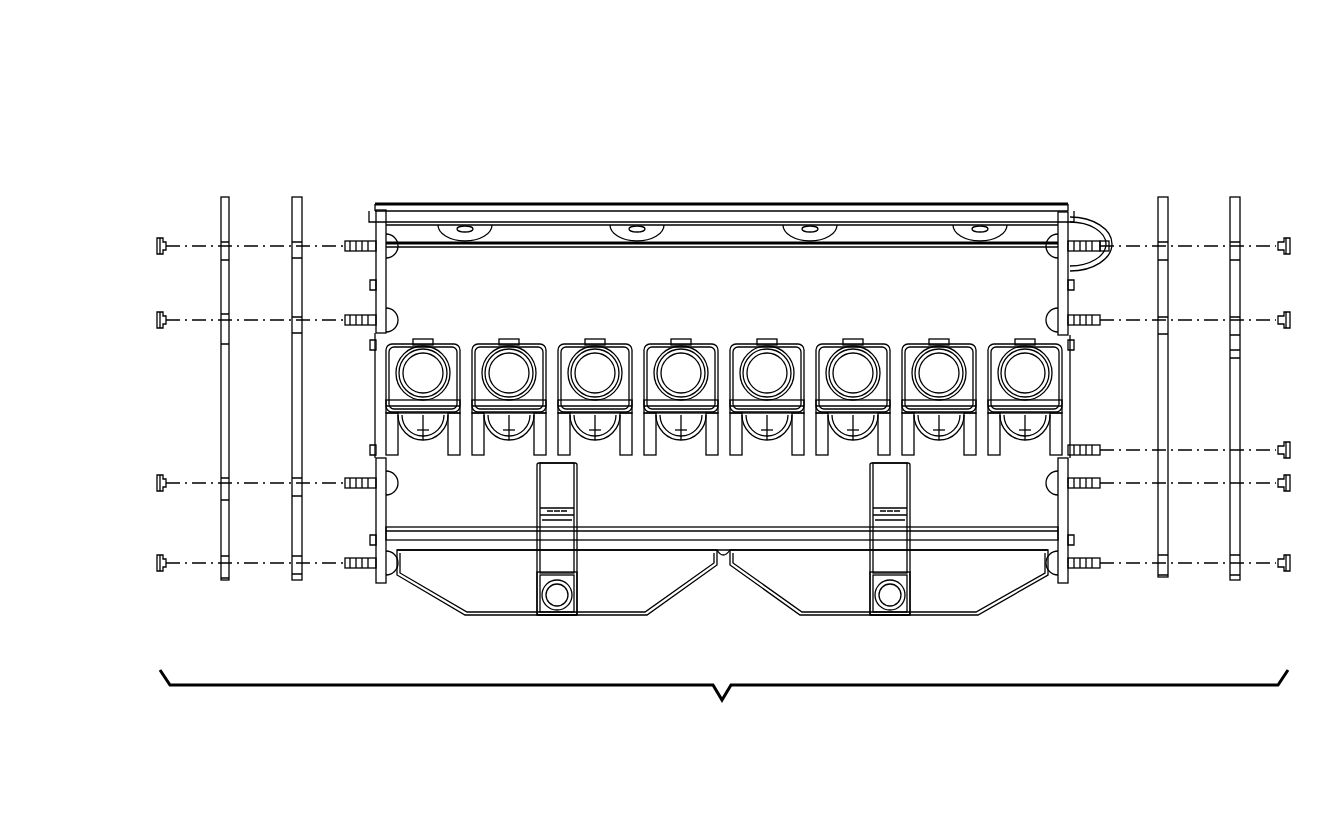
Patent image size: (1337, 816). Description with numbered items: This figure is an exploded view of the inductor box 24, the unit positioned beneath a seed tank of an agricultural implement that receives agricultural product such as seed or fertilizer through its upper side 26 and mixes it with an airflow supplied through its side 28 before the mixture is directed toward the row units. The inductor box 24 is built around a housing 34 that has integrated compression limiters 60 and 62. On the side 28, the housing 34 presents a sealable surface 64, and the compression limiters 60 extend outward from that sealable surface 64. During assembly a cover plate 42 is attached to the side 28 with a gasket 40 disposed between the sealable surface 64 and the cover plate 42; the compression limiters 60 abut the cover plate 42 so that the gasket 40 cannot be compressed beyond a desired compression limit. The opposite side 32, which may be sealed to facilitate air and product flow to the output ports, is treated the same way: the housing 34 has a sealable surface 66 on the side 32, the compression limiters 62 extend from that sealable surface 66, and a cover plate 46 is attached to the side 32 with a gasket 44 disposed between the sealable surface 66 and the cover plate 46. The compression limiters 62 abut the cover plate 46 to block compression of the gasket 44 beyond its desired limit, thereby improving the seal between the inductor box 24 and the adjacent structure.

The inductor box 24 is at (330, 108).
The upper side 26 is at (705, 212).
The side 28 is at (377, 222).
The side 32 is at (1070, 505).
The housing 34 is at (1012, 215).
The gasket 40 is at (292, 445).
The cover plate 42 is at (222, 445).
The gasket 44 is at (1170, 425).
The cover plate 46 is at (1240, 385).
The compression limiters 60 is at (376, 290).
The compression limiters 62 is at (1075, 285).
The sealable surface 64 is at (388, 406).
The sealable surface 66 is at (1080, 395).